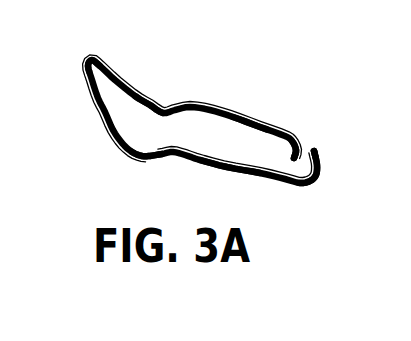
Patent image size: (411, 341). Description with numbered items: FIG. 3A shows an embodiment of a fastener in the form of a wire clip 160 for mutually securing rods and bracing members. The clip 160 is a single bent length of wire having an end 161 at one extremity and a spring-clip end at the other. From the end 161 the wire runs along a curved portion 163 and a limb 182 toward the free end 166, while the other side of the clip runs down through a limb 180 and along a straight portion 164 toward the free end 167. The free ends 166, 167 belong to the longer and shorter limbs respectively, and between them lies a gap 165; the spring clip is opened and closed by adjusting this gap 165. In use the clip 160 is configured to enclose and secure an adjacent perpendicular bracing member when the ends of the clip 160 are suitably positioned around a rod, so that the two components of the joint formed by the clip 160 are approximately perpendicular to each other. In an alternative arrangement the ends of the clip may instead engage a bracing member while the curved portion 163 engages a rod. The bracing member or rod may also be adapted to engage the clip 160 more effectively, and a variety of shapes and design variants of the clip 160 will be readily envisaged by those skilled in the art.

The clip 160 is at (98, 133).
The end 161 is at (90, 51).
The curved portion 163 is at (150, 95).
The limb 182 is at (250, 116).
The free end 166 is at (298, 141).
The gap 165 is at (306, 142).
The free end 167 is at (322, 160).
The straight portion 164 is at (227, 171).
The limb 180 is at (147, 163).